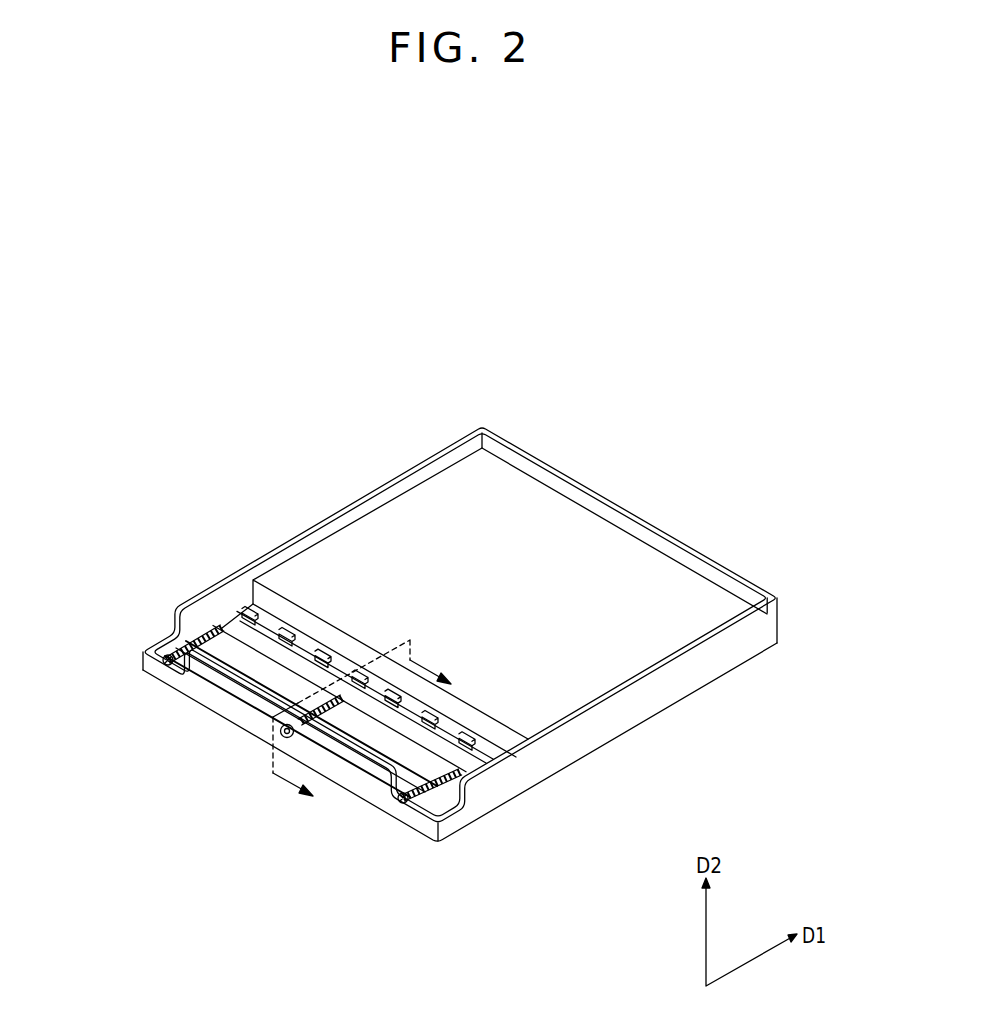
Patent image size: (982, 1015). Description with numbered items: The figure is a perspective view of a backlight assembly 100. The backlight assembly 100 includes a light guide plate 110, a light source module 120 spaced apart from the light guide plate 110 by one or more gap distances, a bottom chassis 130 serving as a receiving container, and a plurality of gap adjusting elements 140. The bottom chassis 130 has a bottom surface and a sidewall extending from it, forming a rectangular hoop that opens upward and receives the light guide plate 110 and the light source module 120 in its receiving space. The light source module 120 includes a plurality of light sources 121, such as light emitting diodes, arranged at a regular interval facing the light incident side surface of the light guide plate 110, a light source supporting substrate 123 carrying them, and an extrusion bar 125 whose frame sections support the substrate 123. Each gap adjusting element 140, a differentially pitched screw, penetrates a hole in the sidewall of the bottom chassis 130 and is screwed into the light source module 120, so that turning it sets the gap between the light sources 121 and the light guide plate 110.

The backlight assembly 100 is at (468, 336).
The light guide plate 110 is at (618, 574).
The light source module 120 is at (93, 718).
The light sources 121 is at (282, 672).
The light source supporting substrate 123 is at (262, 652).
The extrusion bar 125 is at (245, 632).
The bottom chassis 130 is at (578, 743).
The gap adjusting element 140 is at (166, 656).